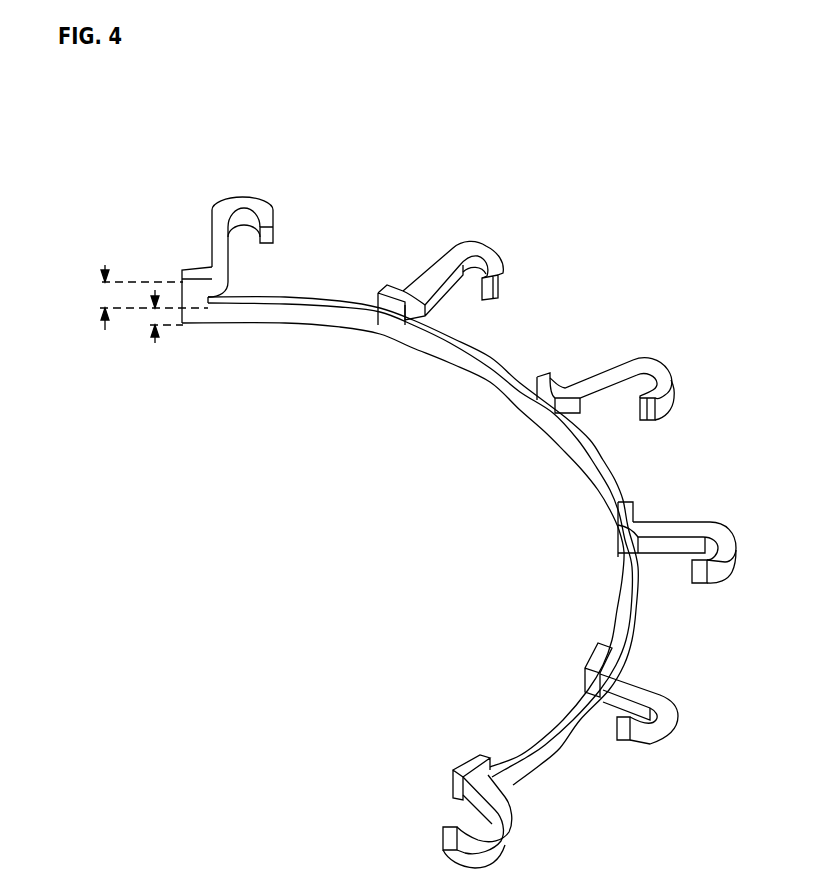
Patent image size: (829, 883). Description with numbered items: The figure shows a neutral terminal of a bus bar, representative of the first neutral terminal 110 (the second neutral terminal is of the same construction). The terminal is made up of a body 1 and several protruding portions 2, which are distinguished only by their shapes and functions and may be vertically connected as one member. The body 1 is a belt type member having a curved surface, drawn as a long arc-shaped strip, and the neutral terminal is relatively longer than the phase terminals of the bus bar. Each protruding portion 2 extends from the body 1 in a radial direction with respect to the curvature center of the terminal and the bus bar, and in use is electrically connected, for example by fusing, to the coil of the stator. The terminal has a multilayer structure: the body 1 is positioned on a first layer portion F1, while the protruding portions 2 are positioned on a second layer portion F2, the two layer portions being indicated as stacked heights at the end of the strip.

The first neutral terminal 110 is at (447, 168).
The body 1 is at (503, 368).
The protruding portion 2 is at (493, 256).
The first layer portion F1 is at (164, 329).
The second layer portion F2 is at (139, 297).